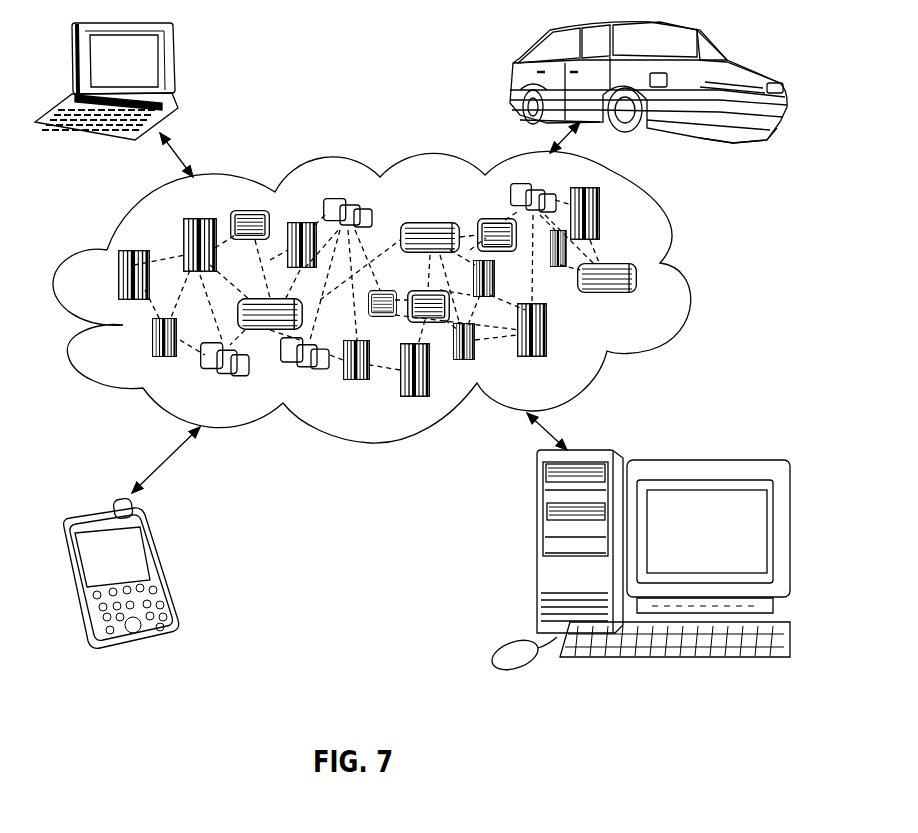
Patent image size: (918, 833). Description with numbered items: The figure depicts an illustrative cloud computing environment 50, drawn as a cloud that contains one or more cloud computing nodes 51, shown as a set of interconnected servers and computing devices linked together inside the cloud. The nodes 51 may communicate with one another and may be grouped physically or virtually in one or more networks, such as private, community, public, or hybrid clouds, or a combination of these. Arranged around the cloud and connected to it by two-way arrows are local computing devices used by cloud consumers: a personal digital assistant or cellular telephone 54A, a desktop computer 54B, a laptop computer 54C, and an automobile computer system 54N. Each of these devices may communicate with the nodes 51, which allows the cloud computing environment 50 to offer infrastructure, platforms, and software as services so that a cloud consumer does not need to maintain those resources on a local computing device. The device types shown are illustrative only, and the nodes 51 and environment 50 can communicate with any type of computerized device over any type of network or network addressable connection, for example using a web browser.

The cloud computing environment 50 is at (673, 243).
The cloud computing nodes 51 is at (664, 300).
The personal digital assistant (PDA) or cellular telephone 54A is at (160, 567).
The desktop computer 54B is at (535, 548).
The laptop computer 54C is at (177, 65).
The automobile computer system 54N is at (512, 72).